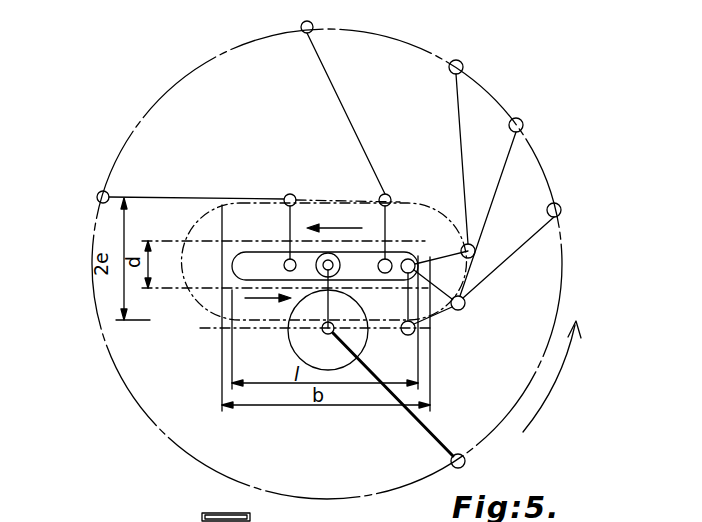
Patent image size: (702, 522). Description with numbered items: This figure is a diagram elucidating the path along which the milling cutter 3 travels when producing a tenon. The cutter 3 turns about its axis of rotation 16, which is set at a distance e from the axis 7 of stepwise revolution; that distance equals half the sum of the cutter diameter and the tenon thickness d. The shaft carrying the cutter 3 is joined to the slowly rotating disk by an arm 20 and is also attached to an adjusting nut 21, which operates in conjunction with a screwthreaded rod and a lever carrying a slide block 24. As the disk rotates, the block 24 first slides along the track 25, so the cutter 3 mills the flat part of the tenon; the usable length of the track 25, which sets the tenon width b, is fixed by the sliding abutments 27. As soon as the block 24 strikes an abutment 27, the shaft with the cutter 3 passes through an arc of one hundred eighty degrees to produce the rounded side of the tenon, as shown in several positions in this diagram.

The cutter 3 is at (300, 339).
The axis of stepwise revolution 7 is at (345, 250).
The axis of rotation 16 is at (352, 343).
The arm 20 is at (421, 430).
The adjusting nut 21 is at (326, 304).
The slide block 24 is at (350, 280).
The track 25 is at (272, 258).
The sliding abutments 27 is at (222, 206).